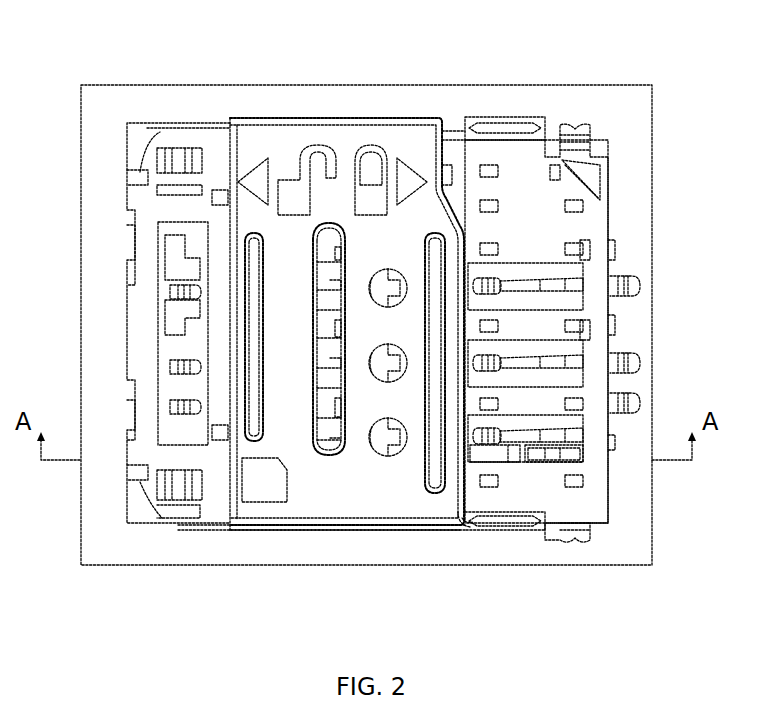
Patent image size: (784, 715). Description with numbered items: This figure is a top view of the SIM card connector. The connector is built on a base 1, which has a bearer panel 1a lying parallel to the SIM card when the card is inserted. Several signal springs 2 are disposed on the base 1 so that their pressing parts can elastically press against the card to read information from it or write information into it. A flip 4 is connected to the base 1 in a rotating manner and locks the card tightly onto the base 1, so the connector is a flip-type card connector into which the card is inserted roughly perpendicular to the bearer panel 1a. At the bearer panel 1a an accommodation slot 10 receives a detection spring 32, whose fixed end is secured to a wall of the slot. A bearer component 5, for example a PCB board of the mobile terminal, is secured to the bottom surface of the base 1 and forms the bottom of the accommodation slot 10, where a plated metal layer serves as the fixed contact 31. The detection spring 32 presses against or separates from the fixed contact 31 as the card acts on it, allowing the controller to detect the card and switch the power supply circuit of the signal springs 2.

The base 1 is at (507, 128).
The bearer panel 1a is at (547, 225).
The signal spring 2 is at (526, 432).
The flip 4 is at (290, 135).
The bearer component 5 is at (415, 105).
The accommodation slot 10 is at (470, 528).
The fixed contact 31 is at (508, 458).
The detection spring 32 is at (540, 453).